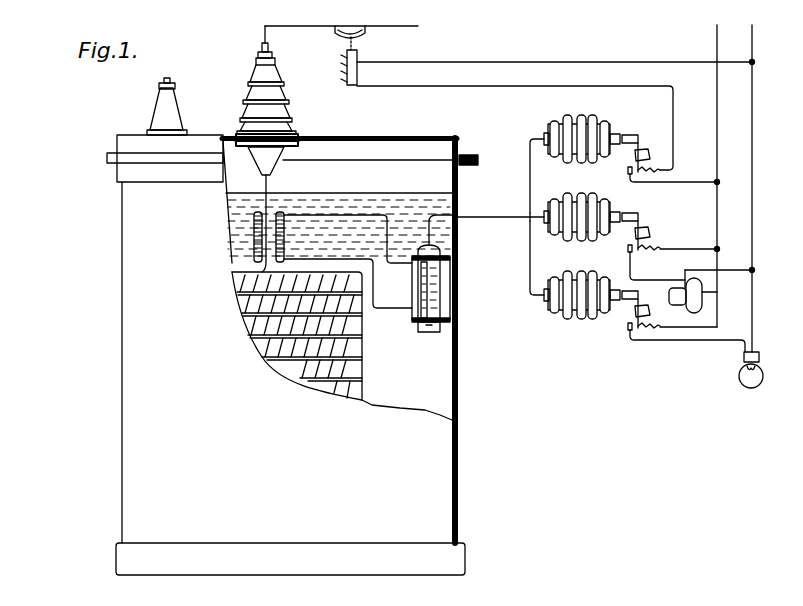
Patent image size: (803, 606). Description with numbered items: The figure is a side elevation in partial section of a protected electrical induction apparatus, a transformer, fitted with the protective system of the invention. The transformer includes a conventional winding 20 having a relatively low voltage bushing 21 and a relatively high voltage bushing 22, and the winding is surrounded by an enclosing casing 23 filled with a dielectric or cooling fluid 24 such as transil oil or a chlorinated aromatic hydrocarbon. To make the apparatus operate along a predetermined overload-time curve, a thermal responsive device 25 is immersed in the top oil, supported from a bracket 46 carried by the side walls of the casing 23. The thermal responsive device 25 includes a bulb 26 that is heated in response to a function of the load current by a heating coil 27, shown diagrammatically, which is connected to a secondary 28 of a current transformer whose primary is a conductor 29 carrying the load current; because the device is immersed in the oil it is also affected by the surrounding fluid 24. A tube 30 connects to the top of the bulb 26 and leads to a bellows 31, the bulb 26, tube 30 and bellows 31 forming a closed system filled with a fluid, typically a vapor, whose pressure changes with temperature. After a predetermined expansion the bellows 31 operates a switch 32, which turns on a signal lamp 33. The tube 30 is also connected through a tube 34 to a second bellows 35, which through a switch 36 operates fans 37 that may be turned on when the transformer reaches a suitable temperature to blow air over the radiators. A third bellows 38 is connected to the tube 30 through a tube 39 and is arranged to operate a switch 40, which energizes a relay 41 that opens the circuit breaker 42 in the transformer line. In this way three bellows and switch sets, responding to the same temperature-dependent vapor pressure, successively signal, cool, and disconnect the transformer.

The winding 20 is at (364, 362).
The low voltage bushing 21 is at (152, 110).
The high voltage bushing 22 is at (258, 70).
The enclosing casing 23 is at (121, 340).
The dielectric or cooling fluid 24 is at (343, 193).
The thermal responsive device 25 is at (438, 273).
The bulb 26 is at (452, 315).
The heating coil 27 is at (418, 290).
The secondary of current transformer 28 is at (283, 210).
The conductor 29 is at (265, 185).
The tube 30 is at (488, 216).
The bellows 31 is at (582, 318).
The switch 32 is at (647, 332).
The signal lamp 33 is at (744, 381).
The tube 34 is at (531, 210).
The second bellows 35 is at (595, 197).
The switch 36 is at (647, 248).
The fans 37 is at (704, 293).
The third bellows 38 is at (596, 117).
The tube 39 is at (540, 137).
The switch 40 is at (641, 141).
The relay 41 is at (358, 70).
The circuit breaker 42 is at (360, 27).
The bracket 46 is at (451, 268).